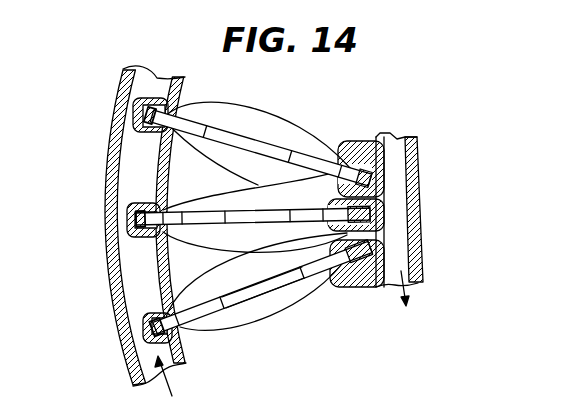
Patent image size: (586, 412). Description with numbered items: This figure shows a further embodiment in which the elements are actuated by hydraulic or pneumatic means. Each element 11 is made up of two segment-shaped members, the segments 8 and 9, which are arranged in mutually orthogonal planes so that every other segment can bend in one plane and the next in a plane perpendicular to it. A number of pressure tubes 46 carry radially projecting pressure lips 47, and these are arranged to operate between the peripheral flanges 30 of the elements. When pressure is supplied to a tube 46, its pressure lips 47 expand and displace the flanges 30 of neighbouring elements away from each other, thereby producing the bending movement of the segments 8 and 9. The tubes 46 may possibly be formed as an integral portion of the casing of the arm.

The segment-shaped member 8 is at (263, 123).
The segment-shaped member 9 is at (212, 149).
The element 11 is at (262, 308).
The peripheral flange 30 is at (292, 280).
The pressure tube 46 is at (104, 176).
The pressure lip 47 is at (157, 157).